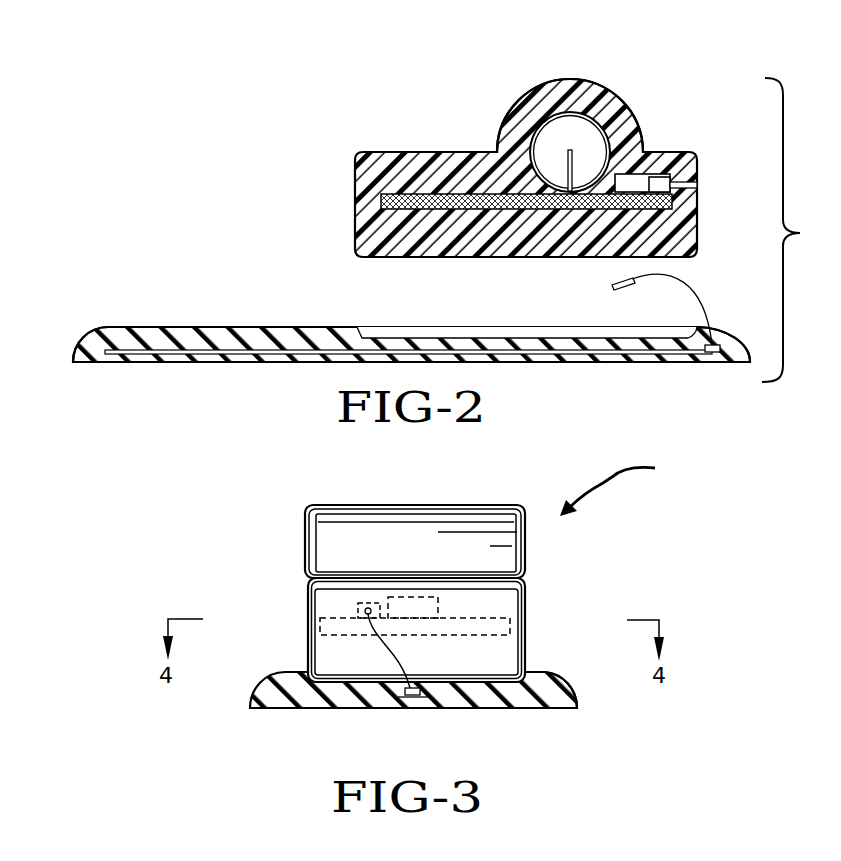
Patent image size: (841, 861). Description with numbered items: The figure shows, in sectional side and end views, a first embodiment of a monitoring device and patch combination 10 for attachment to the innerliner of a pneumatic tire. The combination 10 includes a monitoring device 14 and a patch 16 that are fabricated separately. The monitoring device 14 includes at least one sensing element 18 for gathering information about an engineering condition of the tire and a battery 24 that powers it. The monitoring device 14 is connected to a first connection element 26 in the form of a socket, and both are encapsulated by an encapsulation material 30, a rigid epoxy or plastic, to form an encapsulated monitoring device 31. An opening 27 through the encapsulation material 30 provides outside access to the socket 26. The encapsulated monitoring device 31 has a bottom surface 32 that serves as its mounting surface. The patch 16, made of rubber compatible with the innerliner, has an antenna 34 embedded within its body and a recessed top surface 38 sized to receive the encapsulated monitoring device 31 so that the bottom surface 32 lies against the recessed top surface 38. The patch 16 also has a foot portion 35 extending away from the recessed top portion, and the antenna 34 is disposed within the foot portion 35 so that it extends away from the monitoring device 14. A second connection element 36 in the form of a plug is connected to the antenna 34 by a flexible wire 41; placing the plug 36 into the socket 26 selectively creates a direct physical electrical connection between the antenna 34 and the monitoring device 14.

In FIG. 2, the monitoring device and patch combination 10 is at (797, 230).
In FIG. 3, the monitoring device and patch combination 10 is at (623, 487).
In FIG. 2, the monitoring device 14 is at (465, 188).
In FIG. 3, the monitoring device 14 is at (520, 618).
In FIG. 2, the patch 16 is at (138, 378).
In FIG. 3, the patch 16 is at (312, 724).
In FIG. 2, the sensing element 18 is at (630, 160).
In FIG. 3, the sensing element 18 is at (410, 597).
In FIG. 2, the battery 24 is at (563, 128).
In FIG. 2, the first connection element 26 is at (665, 177).
In FIG. 3, the first connection element 26 is at (358, 610).
In FIG. 2, the opening 27 is at (698, 185).
In FIG. 2, the encapsulation material 30 is at (357, 170).
In FIG. 3, the encapsulation material 30 is at (308, 646).
In FIG. 2, the encapsulated monitoring device 31 is at (405, 142).
In FIG. 3, the encapsulated monitoring device 31 is at (540, 556).
In FIG. 2, the bottom surface 32 is at (440, 257).
In FIG. 2, the antenna 34 is at (256, 356).
In FIG. 3, the antenna 34 is at (412, 698).
In FIG. 2, the foot portion 35 is at (88, 334).
In FIG. 3, the foot portion 35 is at (535, 672).
In FIG. 2, the second connection element 36 is at (615, 292).
In FIG. 3, the second connection element 36 is at (368, 607).
In FIG. 2, the recessed top surface 38 is at (380, 337).
In FIG. 2, the flexible wire 41 is at (684, 292).
In FIG. 3, the flexible wire 41 is at (388, 650).